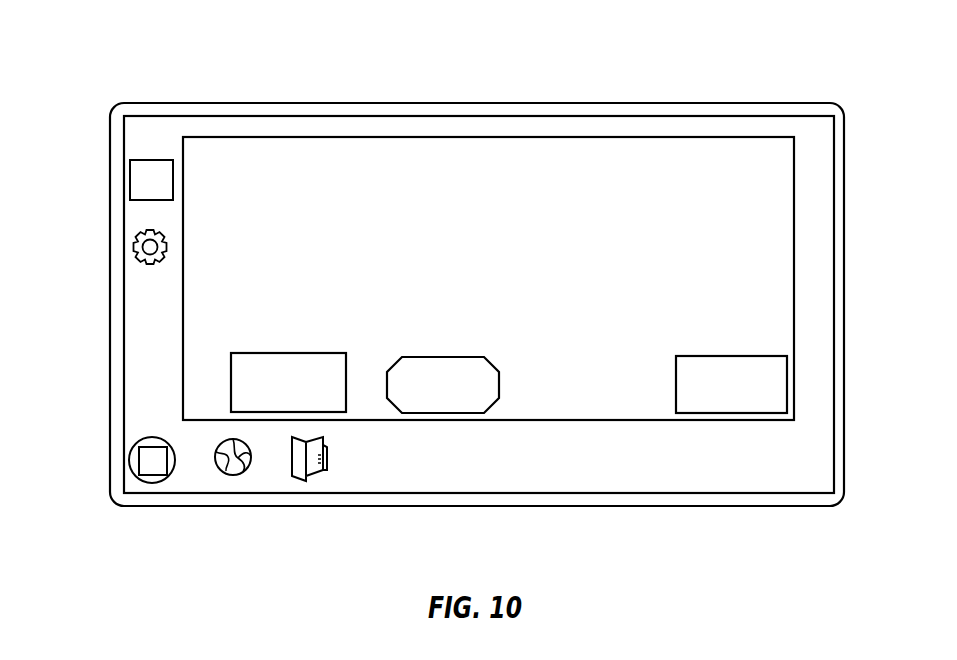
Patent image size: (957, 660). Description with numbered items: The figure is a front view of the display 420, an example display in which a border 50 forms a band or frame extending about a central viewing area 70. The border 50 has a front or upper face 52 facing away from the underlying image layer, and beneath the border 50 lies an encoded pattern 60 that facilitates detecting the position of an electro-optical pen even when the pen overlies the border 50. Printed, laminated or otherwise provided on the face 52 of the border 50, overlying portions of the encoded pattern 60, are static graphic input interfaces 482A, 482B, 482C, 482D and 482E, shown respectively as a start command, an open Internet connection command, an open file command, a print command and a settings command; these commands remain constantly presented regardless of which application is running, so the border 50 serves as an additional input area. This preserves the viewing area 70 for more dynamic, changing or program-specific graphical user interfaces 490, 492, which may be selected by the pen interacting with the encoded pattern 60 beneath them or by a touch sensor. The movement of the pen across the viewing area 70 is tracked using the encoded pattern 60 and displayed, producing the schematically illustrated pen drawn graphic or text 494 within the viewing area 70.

The display 420 is at (90, 108).
The border 50 is at (621, 507).
The front face 52 is at (496, 475).
The encoded pattern 60 is at (402, 475).
The viewing area 70 is at (494, 273).
The graphical user interface 490 is at (456, 357).
The graphical user interface 492 is at (731, 356).
The pen drawn graphic or text 494 is at (283, 353).
The graphic input interface 482A is at (168, 483).
The graphic input interface 482B is at (237, 475).
The graphic input interface 482C is at (318, 480).
The graphic input interface 482D is at (130, 180).
The graphic input interface 482E is at (131, 245).